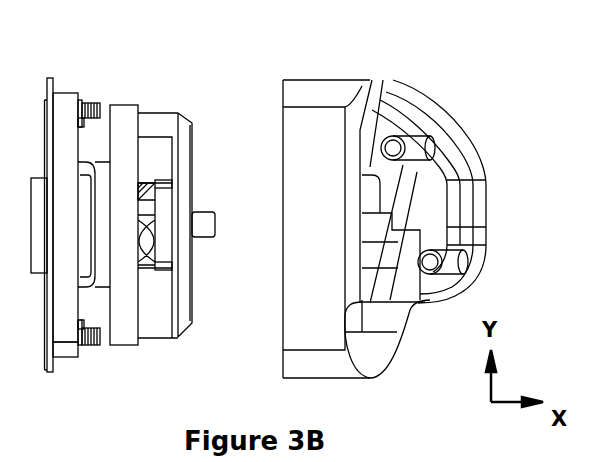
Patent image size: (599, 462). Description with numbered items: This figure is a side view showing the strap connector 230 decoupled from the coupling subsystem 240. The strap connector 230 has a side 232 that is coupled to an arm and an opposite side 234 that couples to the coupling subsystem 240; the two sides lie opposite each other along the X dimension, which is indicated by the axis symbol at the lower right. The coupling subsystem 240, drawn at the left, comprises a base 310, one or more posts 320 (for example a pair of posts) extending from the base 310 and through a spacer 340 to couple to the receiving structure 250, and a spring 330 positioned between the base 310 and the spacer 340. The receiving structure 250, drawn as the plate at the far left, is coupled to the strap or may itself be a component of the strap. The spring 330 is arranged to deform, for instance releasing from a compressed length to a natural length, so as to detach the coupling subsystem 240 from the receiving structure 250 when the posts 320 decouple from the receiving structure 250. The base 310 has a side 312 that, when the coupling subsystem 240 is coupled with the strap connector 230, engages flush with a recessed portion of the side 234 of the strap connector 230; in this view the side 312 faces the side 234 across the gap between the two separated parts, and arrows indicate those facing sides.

The strap connector 230 is at (350, 83).
The side 232 is at (438, 347).
The side 234 is at (266, 272).
The coupling subsystem 240 is at (190, 95).
The receiving structure 250 is at (61, 69).
The base 310 is at (186, 109).
The side 312 is at (240, 305).
The post 320 is at (95, 128).
The spring 330 is at (152, 192).
The spacer 340 is at (125, 336).